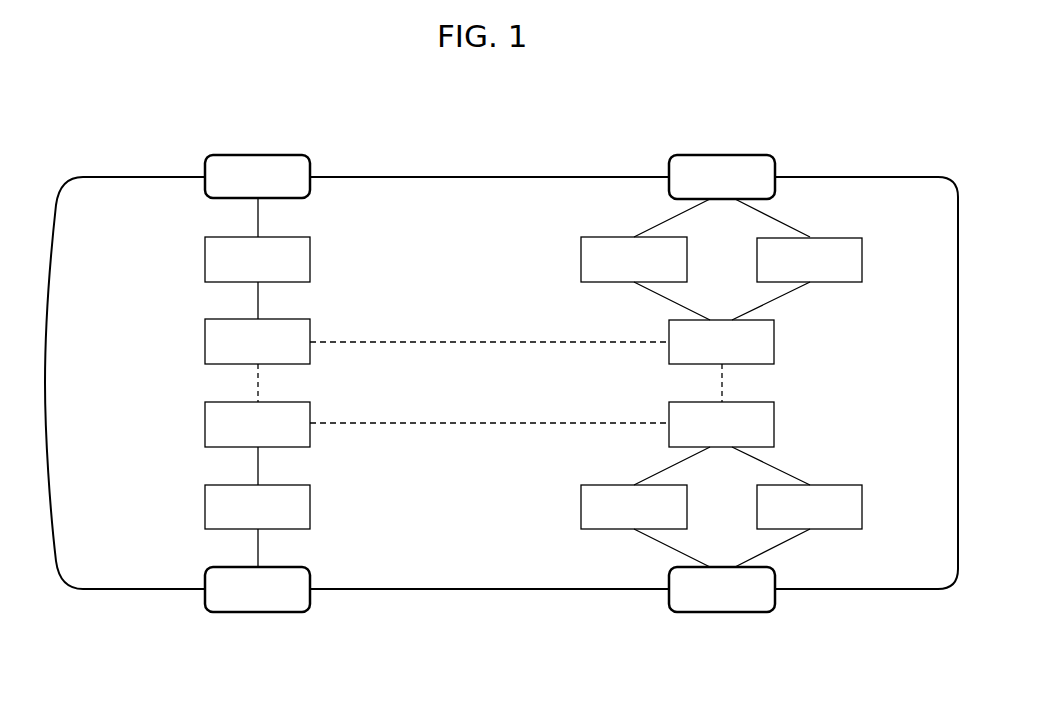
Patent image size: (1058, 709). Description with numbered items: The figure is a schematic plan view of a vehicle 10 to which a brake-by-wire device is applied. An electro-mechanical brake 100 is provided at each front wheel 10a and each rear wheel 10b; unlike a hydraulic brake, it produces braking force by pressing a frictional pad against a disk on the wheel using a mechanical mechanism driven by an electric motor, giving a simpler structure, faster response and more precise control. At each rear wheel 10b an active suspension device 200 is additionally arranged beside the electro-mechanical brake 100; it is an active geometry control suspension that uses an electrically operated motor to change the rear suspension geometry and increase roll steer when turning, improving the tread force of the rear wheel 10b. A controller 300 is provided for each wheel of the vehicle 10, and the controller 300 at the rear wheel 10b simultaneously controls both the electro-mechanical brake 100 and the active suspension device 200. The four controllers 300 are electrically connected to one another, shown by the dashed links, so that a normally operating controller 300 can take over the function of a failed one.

The vehicle 10 is at (117, 170).
The front wheel 10a is at (258, 155).
The rear wheel 10b is at (722, 155).
The electro-mechanical brake 100 is at (310, 262).
The active suspension device 200 is at (862, 258).
The controller 300 is at (310, 322).